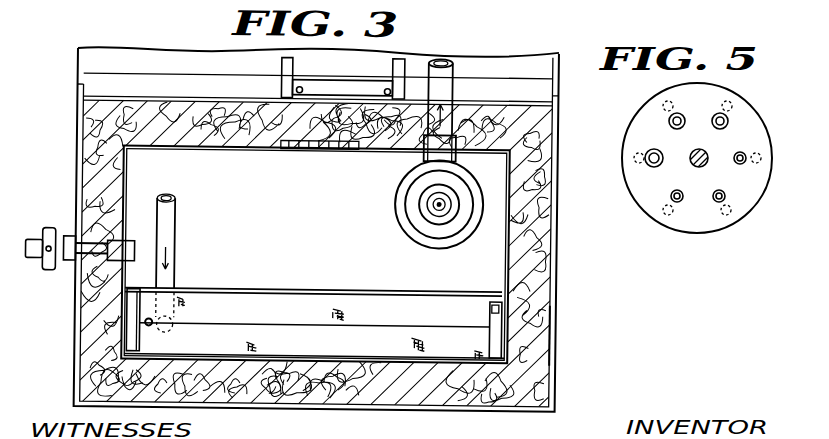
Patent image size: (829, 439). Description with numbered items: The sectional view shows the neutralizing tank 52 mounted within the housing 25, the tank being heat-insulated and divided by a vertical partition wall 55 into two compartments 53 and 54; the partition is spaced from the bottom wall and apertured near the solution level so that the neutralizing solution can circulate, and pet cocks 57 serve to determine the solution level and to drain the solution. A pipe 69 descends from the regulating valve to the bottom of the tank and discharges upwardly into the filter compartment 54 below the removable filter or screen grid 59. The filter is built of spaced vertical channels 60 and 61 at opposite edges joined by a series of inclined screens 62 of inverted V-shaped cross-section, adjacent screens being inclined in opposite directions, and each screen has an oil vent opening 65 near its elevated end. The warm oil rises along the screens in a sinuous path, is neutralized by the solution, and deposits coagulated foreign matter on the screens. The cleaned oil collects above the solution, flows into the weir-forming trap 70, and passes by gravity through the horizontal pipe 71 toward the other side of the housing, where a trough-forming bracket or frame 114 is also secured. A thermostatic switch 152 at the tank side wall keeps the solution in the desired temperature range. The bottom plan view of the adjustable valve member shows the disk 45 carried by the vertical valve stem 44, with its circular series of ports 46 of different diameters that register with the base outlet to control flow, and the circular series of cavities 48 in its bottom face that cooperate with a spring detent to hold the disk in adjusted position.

In FIG. 3, the housing 25 is at (242, 407).
In FIG. 3, the neutralizing tank 52 is at (515, 270).
In FIG. 3, the tank compartment 53 is at (497, 186).
In FIG. 3, the tank compartment 54 is at (545, 328).
In FIG. 3, the partition wall 55 is at (474, 292).
In FIG. 3, the pet cocks 57 is at (48, 228).
In FIG. 3, the filter or screen grid 59 is at (328, 335).
In FIG. 3, the vertical channel 60 is at (134, 312).
In FIG. 3, the vertical channel 61 is at (508, 308).
In FIG. 3, the inclined screens 62 is at (392, 342).
In FIG. 3, the oil vent opening 65 is at (158, 322).
In FIG. 3, the pipe 69 is at (178, 231).
In FIG. 3, the weir-forming trap 70 is at (397, 210).
In FIG. 3, the horizontal pipe 71 is at (453, 72).
In FIG. 3, the trough-forming bracket or frame 114 is at (395, 75).
In FIG. 3, the thermostatic switch 152 is at (318, 148).
In FIG. 5, the valve stem 44 is at (700, 168).
In FIG. 5, the disk 45 is at (748, 193).
In FIG. 5, the ports 46 is at (744, 152).
In FIG. 5, the cavities 48 is at (638, 163).